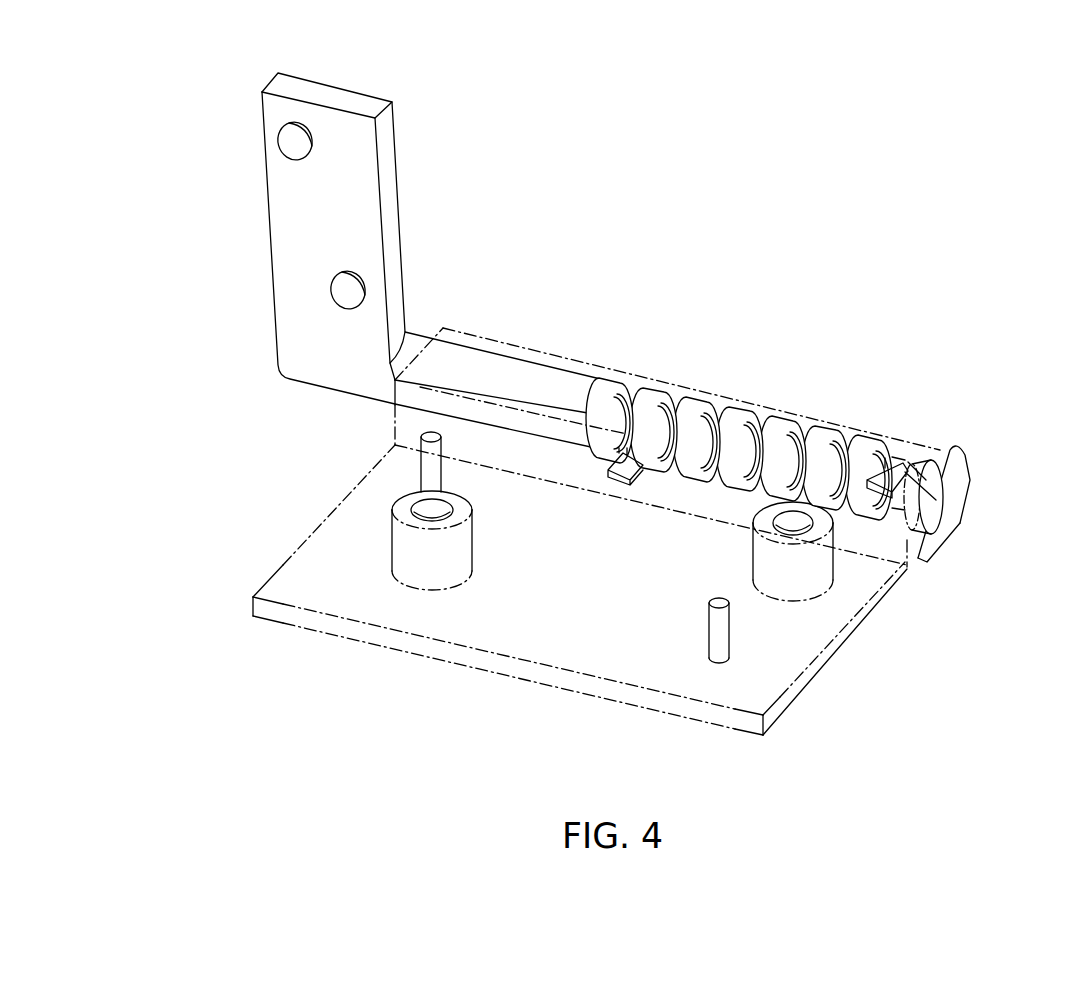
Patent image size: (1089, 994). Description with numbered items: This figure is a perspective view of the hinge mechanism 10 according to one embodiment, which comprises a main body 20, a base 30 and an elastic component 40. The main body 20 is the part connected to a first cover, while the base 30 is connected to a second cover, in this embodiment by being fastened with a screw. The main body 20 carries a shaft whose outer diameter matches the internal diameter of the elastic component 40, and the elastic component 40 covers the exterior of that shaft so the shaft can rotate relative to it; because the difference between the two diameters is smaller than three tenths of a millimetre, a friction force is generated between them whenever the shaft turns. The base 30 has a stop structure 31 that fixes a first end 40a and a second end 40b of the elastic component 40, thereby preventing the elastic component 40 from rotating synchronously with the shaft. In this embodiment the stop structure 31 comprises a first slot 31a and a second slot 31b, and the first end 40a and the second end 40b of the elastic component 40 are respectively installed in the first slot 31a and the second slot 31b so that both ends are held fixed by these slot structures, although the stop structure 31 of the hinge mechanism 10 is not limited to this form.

The hinge mechanism 10 is at (993, 210).
The main body 20 is at (282, 223).
The base 30 is at (303, 555).
The stop structure 31 is at (1033, 502).
The first slot 31a is at (940, 497).
The second slot 31b is at (933, 553).
The elastic component 40 is at (778, 432).
The first end 40a is at (885, 447).
The second end 40b is at (625, 478).